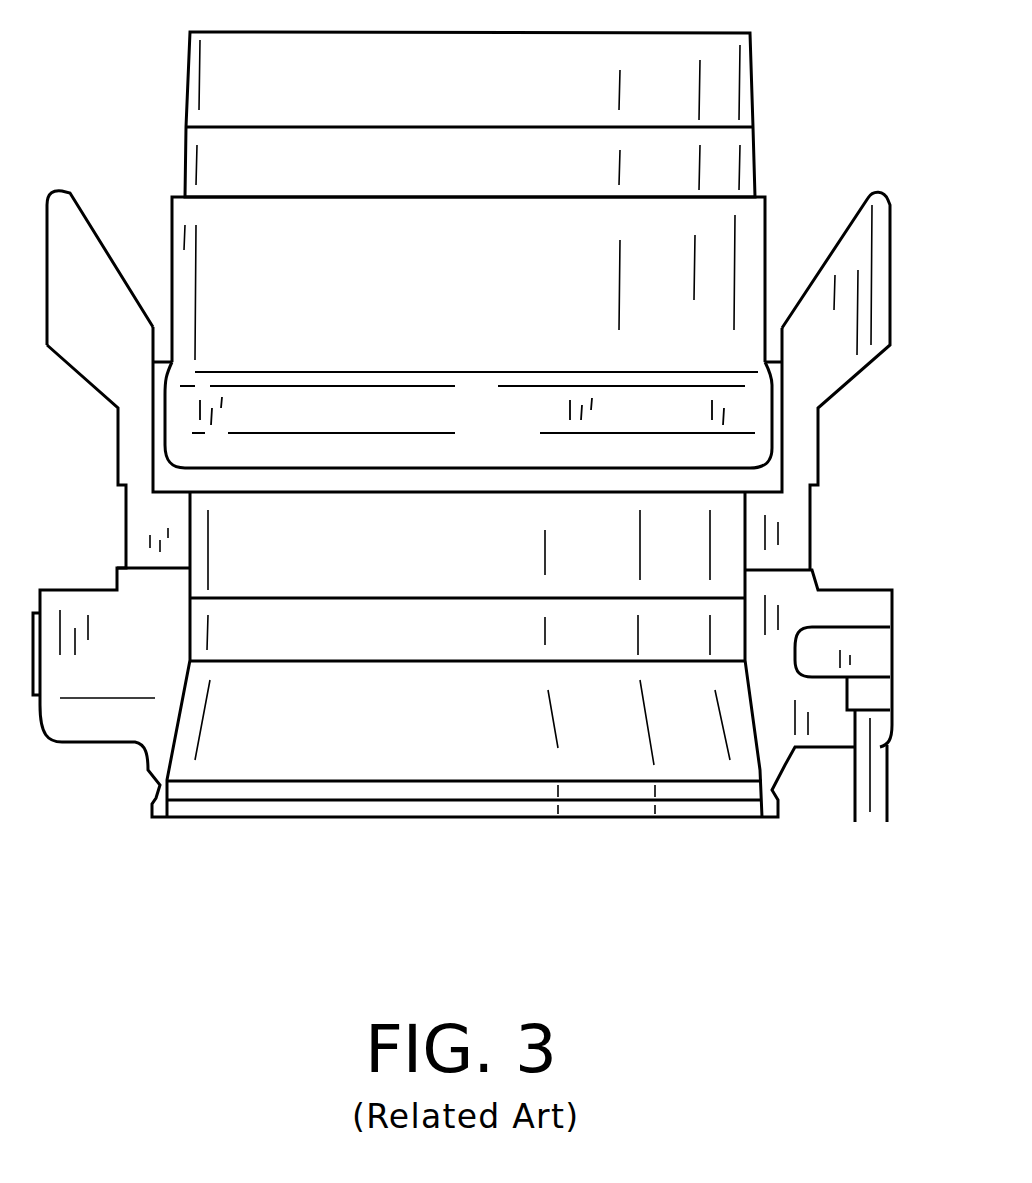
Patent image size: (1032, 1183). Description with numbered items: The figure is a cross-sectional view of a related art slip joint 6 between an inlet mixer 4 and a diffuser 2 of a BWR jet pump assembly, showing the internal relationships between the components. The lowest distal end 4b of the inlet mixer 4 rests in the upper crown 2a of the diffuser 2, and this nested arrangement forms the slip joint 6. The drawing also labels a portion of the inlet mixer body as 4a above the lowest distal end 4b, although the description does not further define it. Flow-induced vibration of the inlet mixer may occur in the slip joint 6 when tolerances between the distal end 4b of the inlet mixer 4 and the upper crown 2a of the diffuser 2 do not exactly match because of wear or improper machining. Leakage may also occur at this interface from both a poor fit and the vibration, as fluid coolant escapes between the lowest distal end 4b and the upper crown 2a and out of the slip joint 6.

The diffuser 2 is at (672, 730).
The upper crown 2a is at (822, 472).
The inlet mixer 4 is at (755, 70).
The blade holder body 4a is at (768, 233).
The lowest distal end 4b is at (165, 455).
The slip joint 6 is at (785, 433).